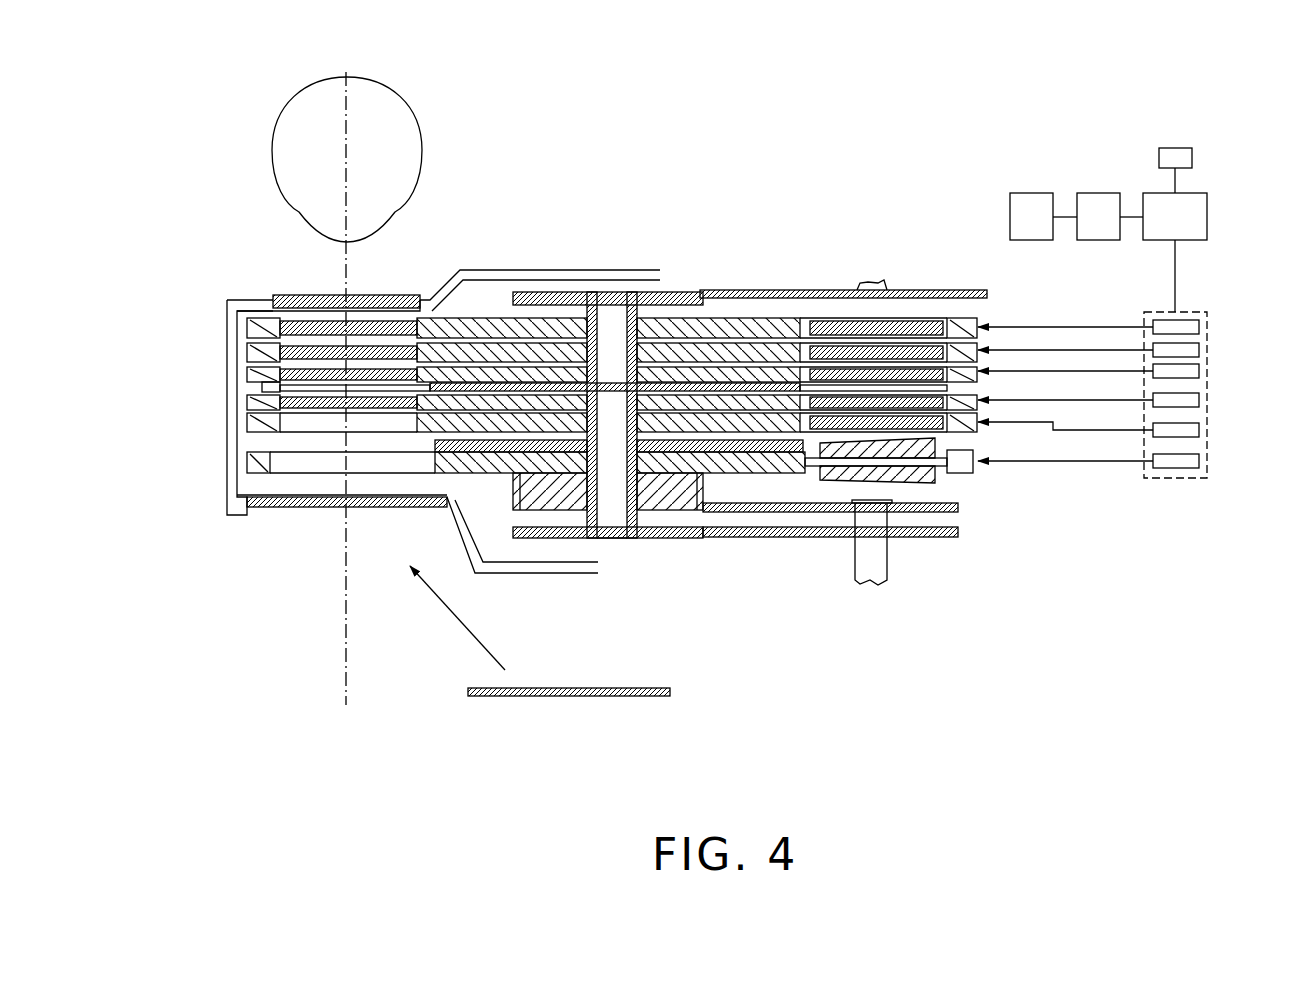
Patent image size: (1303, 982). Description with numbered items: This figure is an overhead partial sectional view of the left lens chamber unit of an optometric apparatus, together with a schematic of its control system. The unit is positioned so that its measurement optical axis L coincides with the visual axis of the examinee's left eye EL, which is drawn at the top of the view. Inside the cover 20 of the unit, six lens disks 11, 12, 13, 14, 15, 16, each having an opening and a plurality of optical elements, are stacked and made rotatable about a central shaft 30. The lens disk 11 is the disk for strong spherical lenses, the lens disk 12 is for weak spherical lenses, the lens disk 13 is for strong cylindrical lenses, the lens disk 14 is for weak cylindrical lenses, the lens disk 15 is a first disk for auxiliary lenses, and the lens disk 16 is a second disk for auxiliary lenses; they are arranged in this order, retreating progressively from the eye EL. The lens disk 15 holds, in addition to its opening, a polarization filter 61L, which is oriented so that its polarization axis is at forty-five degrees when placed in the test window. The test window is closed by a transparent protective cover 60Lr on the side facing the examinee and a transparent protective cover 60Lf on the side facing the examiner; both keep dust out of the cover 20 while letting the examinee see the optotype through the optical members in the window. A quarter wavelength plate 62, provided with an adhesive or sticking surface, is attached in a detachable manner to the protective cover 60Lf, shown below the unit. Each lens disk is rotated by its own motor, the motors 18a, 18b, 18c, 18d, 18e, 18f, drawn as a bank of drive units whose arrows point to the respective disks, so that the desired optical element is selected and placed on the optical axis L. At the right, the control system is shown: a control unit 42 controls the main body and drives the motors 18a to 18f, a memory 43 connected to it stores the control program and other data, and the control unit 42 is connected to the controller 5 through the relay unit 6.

The examinee's left eye EL is at (420, 132).
The measurement optical axis L is at (346, 652).
The cover 20 is at (575, 269).
The shaft 30 is at (613, 310).
The protective cover 60Lr is at (267, 298).
The protective cover 60Lf is at (272, 510).
The lens disk 11 is at (225, 300).
The lens disk 12 is at (250, 351).
The lens disk 13 is at (250, 373).
The lens disk 14 is at (250, 402).
The lens disk 15 is at (250, 425).
The lens disk 16 is at (250, 465).
The polarization filter 61L is at (960, 428).
The quarter wavelength plate 62 is at (600, 688).
The controller 5 is at (1030, 193).
The relay unit 6 is at (1097, 193).
The control unit 42 is at (1207, 222).
The memory 43 is at (1192, 158).
The motor 18a is at (1199, 322).
The motor 18b is at (1199, 350).
The motor 18c is at (1199, 371).
The motor 18d is at (1199, 400).
The motor 18e is at (1199, 430).
The motor 18f is at (1199, 461).